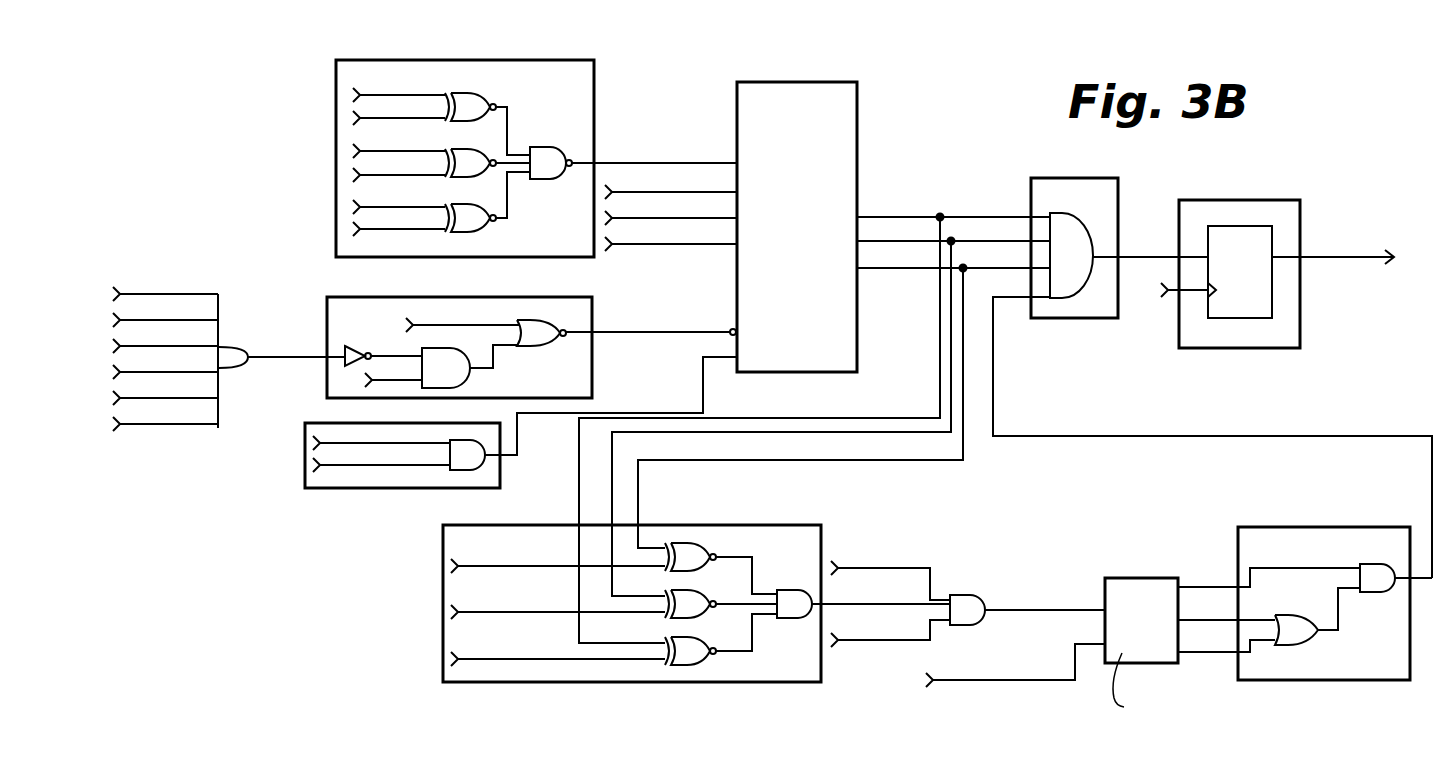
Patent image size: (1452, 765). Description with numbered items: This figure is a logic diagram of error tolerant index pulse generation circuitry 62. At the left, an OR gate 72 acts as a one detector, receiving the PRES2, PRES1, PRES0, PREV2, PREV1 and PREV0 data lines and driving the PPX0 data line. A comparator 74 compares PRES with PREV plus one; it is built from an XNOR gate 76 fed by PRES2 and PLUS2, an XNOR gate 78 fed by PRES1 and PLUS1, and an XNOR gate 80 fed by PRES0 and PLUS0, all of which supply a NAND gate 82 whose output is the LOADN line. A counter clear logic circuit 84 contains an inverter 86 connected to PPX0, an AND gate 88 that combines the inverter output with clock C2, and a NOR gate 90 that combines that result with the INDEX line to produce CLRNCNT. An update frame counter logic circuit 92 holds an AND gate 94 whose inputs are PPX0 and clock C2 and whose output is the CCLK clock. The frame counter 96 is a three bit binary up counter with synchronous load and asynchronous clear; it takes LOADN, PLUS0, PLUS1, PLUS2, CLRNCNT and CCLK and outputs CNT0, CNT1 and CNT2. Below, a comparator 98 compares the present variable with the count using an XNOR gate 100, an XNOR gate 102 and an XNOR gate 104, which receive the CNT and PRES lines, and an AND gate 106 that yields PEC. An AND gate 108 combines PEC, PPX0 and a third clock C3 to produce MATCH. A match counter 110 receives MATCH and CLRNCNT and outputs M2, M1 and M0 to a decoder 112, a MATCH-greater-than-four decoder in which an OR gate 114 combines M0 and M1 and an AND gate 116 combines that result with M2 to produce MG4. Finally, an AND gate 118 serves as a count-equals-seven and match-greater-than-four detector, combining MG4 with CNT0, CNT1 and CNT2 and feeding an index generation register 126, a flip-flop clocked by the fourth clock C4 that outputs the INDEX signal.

The index detection circuit 62 is at (334, 548).
The OR gate 72 is at (236, 368).
The comparator 74 is at (536, 139).
The XNOR gate 76 is at (470, 96).
The XNOR gate 78 is at (470, 152).
The XNOR gate 80 is at (475, 228).
The NAND gate 82 is at (548, 179).
The counter clear logic circuit 84 is at (489, 349).
The inverter 86 is at (365, 318).
The AND gate 88 is at (462, 378).
The NOR gate 90 is at (545, 343).
The update frame counter logic circuit 92 is at (429, 455).
The AND gate 94 is at (480, 440).
The frame counter 96 is at (800, 82).
The comparator 98 is at (696, 582).
The XNOR gate 100 is at (702, 549).
The XNOR gate 102 is at (690, 595).
The XNOR gate 104 is at (690, 642).
The AND gate 106 is at (800, 568).
The AND gate 108 is at (972, 623).
The match counter 110 is at (1125, 590).
The decoder 112 is at (1335, 590).
The OR gate 114 is at (1302, 645).
The AND gate 116 is at (1372, 592).
The AND gate 118 is at (1076, 270).
The flip-flop 126 is at (1215, 236).